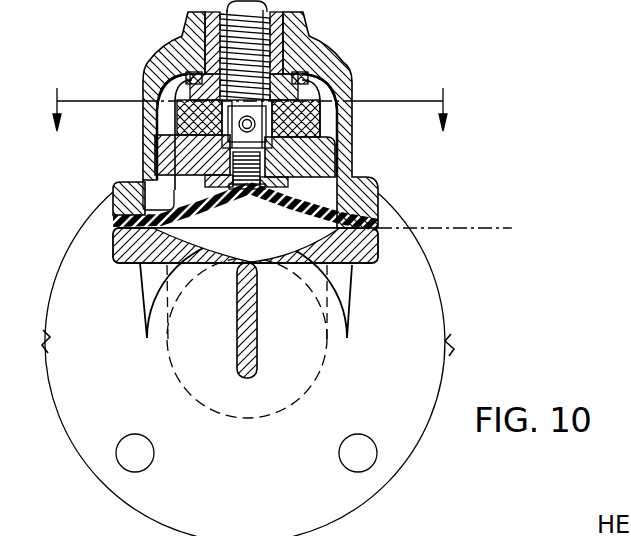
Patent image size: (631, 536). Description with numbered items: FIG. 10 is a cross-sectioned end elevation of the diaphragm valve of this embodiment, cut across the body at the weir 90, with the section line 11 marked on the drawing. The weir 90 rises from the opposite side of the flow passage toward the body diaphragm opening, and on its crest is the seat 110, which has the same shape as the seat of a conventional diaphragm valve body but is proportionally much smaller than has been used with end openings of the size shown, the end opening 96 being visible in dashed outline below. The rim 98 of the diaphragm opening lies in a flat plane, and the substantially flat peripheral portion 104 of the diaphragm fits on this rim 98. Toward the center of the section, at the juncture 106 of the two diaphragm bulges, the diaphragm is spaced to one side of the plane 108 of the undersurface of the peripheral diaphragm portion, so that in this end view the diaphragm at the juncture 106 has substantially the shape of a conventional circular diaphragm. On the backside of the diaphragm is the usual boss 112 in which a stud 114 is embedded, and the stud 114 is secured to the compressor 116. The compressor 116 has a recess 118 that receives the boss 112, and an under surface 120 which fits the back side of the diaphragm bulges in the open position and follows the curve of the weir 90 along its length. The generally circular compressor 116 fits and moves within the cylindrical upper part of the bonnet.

The section line 11- 11 is at (252, 98).
The weir 90 is at (170, 266).
The end opening 96 is at (318, 358).
The rim of the diaphragm opening 98 is at (360, 188).
The peripheral portion of the diaphragm 104 is at (115, 218).
The juncture of the two bulges 106 is at (308, 192).
The plane of the undersurface of the peripheral diaphragm portion 108 is at (424, 227).
The seat 110 is at (362, 252).
The boss 112 is at (190, 157).
The stud 114 is at (322, 100).
The compressor 116 is at (147, 97).
The recess 118 is at (300, 140).
The under surface 120 is at (118, 189).